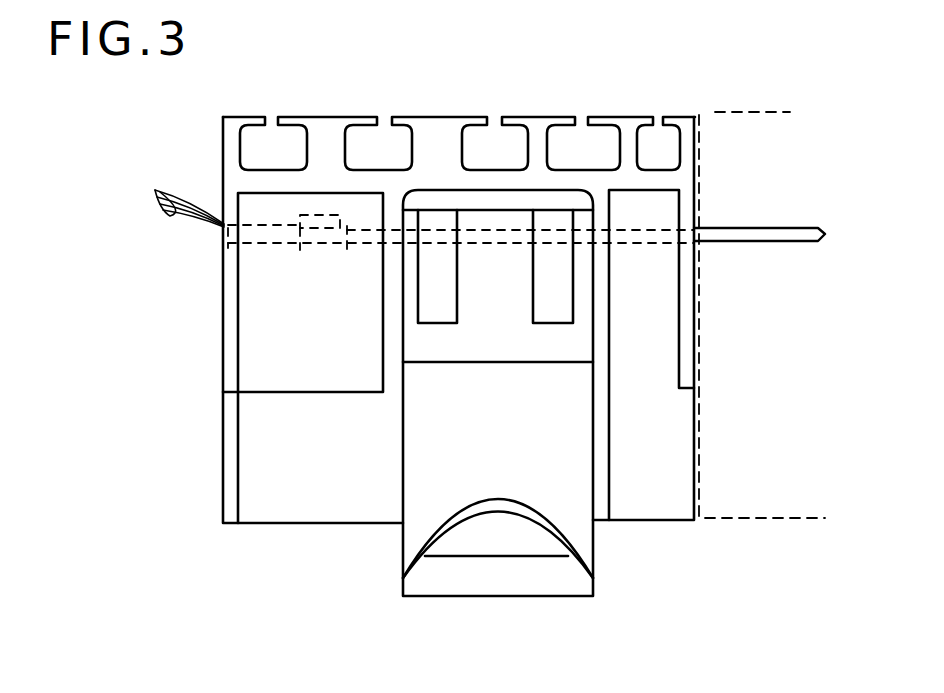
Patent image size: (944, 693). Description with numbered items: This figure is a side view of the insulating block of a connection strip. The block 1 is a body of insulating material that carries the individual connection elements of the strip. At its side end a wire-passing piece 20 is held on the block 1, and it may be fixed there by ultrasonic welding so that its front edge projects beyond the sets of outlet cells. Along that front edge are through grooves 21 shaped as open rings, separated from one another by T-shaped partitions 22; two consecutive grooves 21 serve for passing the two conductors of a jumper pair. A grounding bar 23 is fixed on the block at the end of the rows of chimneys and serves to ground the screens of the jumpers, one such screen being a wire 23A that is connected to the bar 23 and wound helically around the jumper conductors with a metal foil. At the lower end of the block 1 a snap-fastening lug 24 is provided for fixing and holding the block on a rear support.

The block 1 is at (223, 183).
The wire-passing piece 20 is at (640, 115).
The through groove 21 is at (457, 122).
The T-shaped partition 22 is at (627, 130).
The grounding bar 23 is at (767, 238).
The wire 23A is at (187, 220).
The snap-fastening lug 24 is at (550, 577).